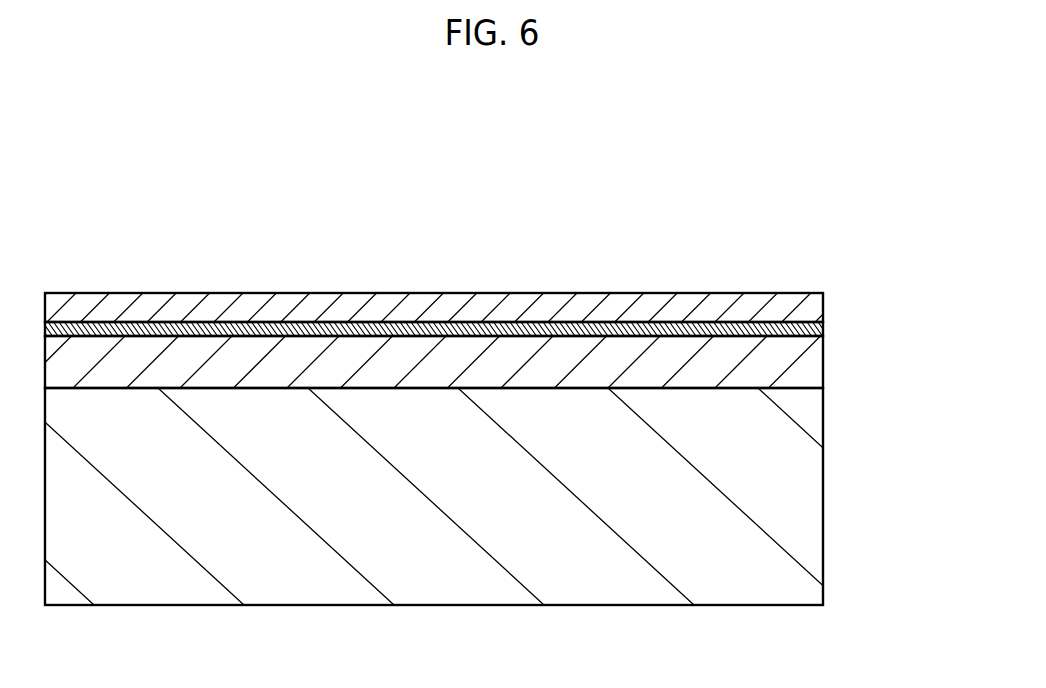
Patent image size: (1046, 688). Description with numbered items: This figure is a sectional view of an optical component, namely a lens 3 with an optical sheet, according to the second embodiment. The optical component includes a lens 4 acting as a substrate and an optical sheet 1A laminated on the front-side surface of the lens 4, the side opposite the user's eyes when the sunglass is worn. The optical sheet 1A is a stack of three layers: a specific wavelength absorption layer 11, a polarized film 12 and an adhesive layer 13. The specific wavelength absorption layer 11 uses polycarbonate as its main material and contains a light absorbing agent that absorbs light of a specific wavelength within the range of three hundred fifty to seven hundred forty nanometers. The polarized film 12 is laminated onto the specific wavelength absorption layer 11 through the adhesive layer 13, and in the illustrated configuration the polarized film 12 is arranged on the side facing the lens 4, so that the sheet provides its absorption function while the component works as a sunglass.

The lens 3 is at (746, 154).
The optical sheet 1A is at (903, 275).
The specific wavelength absorption layer 11 is at (823, 309).
The adhesive layer 13 is at (817, 327).
The polarized film 12 is at (813, 365).
The lens 4 is at (833, 495).